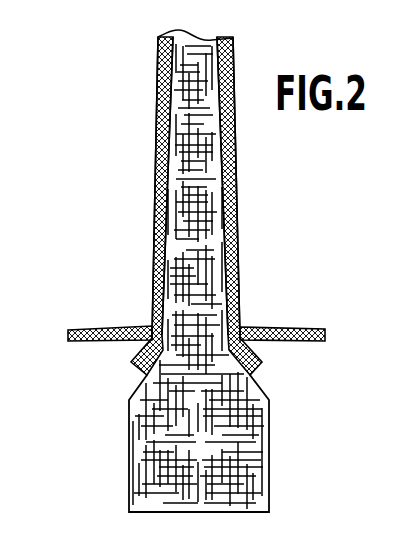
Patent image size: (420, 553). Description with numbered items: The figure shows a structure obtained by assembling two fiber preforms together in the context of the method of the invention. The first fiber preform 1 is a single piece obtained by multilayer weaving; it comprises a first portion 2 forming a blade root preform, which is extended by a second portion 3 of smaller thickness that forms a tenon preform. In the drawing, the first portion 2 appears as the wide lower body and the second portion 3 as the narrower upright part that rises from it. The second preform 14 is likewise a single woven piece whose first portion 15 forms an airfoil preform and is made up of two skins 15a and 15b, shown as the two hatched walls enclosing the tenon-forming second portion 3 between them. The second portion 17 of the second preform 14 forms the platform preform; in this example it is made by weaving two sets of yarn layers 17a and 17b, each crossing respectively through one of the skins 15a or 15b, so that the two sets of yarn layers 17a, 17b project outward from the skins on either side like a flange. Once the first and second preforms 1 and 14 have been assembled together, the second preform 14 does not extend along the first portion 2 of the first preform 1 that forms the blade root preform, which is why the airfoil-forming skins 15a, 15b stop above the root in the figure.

The first fiber preform 1 is at (113, 433).
The first portion 2 is at (258, 463).
The second portion 3 is at (197, 215).
The second preform 14 is at (137, 167).
The first portion 15 is at (180, 206).
The skin 15a is at (153, 260).
The skin 15b is at (240, 257).
The second portion 17 is at (207, 345).
The set of yarn layers 17a is at (86, 328).
The set of yarn layers 17b is at (295, 350).